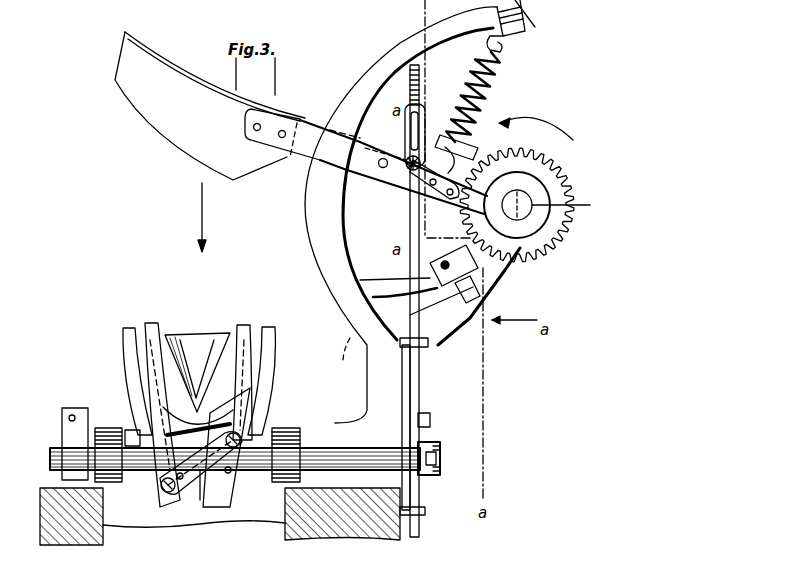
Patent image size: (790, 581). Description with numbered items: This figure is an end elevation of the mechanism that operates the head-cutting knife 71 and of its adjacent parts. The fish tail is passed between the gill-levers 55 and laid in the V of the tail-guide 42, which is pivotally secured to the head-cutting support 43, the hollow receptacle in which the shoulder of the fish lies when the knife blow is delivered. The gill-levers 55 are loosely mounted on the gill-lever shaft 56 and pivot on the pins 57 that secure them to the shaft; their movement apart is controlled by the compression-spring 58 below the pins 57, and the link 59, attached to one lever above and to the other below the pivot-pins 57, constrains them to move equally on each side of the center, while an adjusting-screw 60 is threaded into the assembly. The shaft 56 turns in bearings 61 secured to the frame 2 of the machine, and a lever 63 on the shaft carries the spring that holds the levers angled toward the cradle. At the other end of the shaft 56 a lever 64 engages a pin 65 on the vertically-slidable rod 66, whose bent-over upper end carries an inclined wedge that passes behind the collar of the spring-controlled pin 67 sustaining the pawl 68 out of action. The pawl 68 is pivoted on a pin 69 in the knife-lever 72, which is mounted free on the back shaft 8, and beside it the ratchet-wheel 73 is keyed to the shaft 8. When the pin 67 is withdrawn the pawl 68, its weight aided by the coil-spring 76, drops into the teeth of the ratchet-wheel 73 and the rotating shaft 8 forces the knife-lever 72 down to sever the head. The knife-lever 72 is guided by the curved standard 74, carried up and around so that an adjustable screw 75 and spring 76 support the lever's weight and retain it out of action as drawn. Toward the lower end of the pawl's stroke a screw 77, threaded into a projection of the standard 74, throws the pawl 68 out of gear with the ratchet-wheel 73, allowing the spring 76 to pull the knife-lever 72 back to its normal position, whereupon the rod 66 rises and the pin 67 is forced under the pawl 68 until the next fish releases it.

The frame base 2 is at (102, 540).
The back shaft 8 is at (543, 205).
The tail-guide 42 is at (208, 341).
The head-cutting support 43 is at (127, 355).
The gill-levers 55 is at (147, 325).
The gill-lever shaft 56 is at (246, 468).
The pins 57 is at (176, 478).
The compression-spring 58 is at (197, 484).
The link 59 is at (200, 500).
The adjusting-screw 60 is at (131, 430).
The bearings 61 is at (286, 430).
The lever 63 is at (62, 427).
The lever 64 is at (430, 434).
The pin 65 is at (430, 421).
The vertically-slidable rod 66 is at (408, 125).
The spring-controlled pin 67 is at (421, 184).
The pawl 68 is at (432, 138).
The pin 69 is at (377, 173).
The knife blade 71 is at (210, 106).
The knife-lever 72 is at (306, 132).
The ratchet-wheel 73 is at (562, 183).
The curved standard 74 is at (358, 88).
The adjustable screw 75 is at (512, 38).
The spring 76 is at (491, 93).
The screw 77 is at (480, 293).